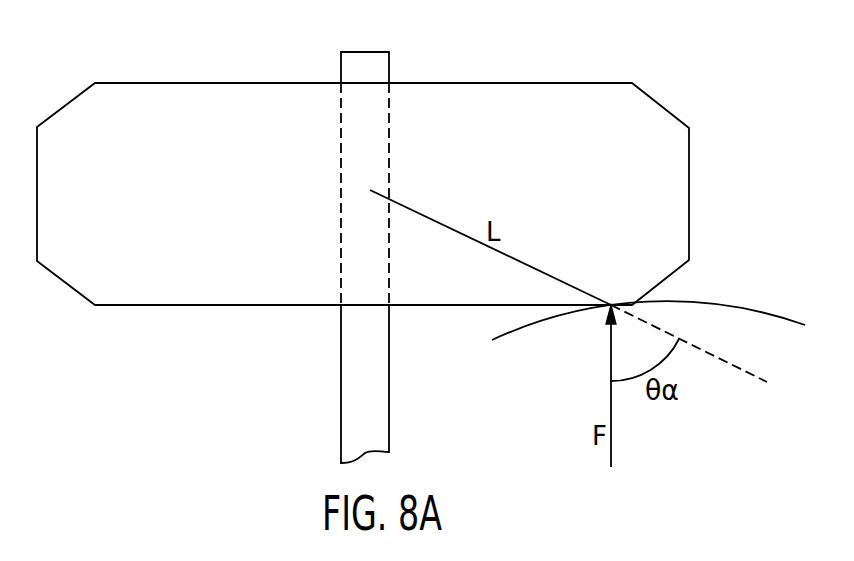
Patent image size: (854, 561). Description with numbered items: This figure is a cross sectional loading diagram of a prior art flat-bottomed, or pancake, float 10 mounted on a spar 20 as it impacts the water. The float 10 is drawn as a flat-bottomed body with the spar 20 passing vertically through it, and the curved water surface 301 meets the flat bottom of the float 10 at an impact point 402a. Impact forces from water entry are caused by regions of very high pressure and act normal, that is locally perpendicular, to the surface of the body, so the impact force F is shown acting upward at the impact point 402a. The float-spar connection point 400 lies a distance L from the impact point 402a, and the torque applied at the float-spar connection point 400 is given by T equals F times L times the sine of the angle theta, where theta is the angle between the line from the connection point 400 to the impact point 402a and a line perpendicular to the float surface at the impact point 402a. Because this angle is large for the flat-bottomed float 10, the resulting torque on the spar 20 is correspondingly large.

The float 10 is at (185, 82).
The spar 20 is at (362, 58).
The float-spar connection point 400 is at (370, 190).
The impact point 402a is at (612, 303).
The water surface 301 is at (737, 308).